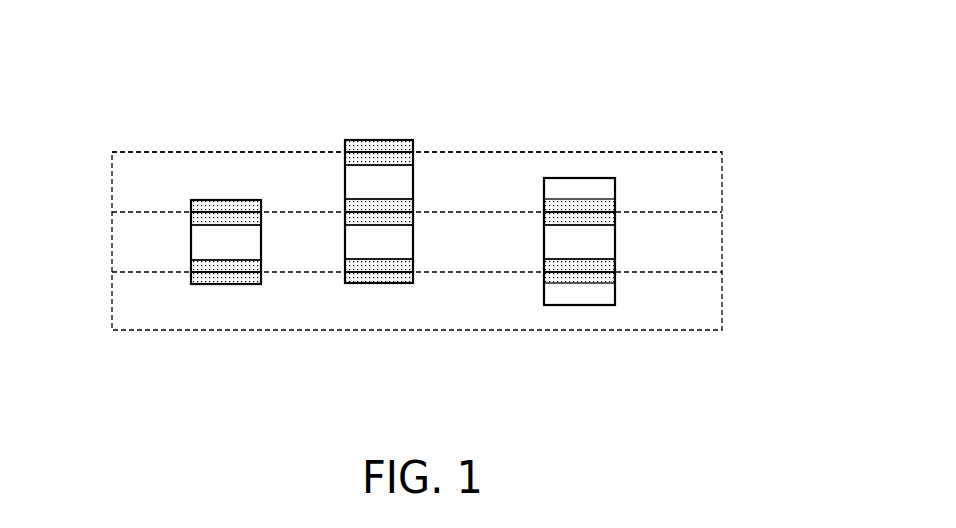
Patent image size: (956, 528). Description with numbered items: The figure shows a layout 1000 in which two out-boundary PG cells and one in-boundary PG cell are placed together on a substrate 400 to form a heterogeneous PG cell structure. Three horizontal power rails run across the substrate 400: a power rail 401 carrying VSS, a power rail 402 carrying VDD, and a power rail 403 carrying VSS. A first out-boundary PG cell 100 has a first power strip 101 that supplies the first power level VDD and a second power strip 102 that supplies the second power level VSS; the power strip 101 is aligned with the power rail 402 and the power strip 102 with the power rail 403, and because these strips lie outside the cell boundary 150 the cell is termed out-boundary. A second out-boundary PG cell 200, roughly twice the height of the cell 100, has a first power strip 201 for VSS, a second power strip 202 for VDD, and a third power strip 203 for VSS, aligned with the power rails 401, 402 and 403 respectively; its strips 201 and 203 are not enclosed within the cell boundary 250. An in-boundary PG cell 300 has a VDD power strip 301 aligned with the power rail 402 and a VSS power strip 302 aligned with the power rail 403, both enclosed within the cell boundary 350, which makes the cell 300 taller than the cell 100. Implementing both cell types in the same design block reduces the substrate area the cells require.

The layout 1000 is at (688, 42).
The substrate 400 is at (110, 172).
The power rail 401 is at (141, 152).
The power rail 402 is at (125, 212).
The power rail 403 is at (124, 272).
The first out-boundary PG cell 100 is at (236, 242).
The first power strip 101 is at (213, 200).
The second power strip 102 is at (225, 284).
The cell boundary 150 is at (262, 255).
The second out-boundary PG cell 200 is at (345, 182).
The first power strip 201 is at (386, 146).
The second power strip 202 is at (406, 204).
The third power strip 203 is at (374, 283).
The cell boundary 250 is at (414, 246).
The in-boundary PG cell 300 is at (594, 240).
The VDD power strip 301 is at (571, 206).
The VSS power strip 302 is at (562, 282).
The cell boundary 350 is at (616, 247).